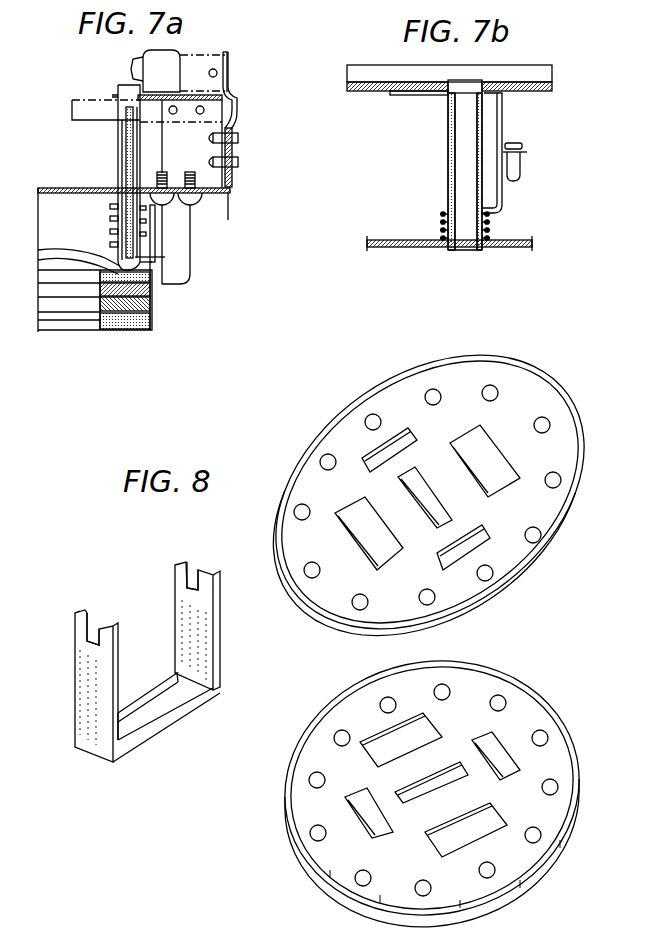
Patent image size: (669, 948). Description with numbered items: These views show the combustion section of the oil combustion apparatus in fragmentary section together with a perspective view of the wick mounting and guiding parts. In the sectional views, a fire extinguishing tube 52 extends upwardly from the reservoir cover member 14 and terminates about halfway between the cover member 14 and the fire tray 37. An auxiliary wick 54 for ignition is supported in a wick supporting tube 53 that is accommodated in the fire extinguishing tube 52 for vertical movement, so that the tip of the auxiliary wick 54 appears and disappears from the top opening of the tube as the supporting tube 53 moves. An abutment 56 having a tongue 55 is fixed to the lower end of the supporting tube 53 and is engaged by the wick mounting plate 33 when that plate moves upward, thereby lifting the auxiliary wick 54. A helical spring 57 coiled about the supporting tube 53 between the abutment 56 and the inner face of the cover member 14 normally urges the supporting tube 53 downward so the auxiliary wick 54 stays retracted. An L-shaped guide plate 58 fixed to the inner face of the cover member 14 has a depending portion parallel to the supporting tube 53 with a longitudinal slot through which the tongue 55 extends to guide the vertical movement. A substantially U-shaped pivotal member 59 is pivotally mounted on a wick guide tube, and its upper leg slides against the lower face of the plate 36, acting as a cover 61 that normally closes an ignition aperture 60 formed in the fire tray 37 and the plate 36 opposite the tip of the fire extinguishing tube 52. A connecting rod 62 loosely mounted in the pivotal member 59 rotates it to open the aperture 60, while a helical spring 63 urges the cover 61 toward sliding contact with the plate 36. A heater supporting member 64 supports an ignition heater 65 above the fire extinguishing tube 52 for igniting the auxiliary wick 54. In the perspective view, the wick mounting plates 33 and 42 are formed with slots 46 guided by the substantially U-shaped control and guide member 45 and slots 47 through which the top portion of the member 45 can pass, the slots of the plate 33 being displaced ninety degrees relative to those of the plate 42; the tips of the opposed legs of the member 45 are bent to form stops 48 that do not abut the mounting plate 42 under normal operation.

In FIG. 7a, the reservoir cover member 14 is at (52, 188).
In FIG. 8, the wick mounting plate 33 is at (548, 504).
In FIG. 7b, the plate 36 is at (532, 93).
In FIG. 7b, the fire tray 37 is at (530, 78).
In FIG. 8, the wick mounting plate 42 is at (528, 706).
In FIG. 8, the control and guide member 45 is at (205, 652).
In FIG. 8, the slots 46 is at (445, 558).
In FIG. 8, the slots 47 is at (497, 452).
In FIG. 8, the stops 48 is at (90, 624).
In FIG. 7a, the fire extinguishing tube 52 is at (118, 178).
In FIG. 7a, the wick supporting tube 53 is at (124, 158).
In FIG. 7a, the auxiliary wick 54 is at (126, 132).
In FIG. 7a, the tongue 55 is at (140, 258).
In FIG. 7a, the abutment 56 is at (148, 262).
In FIG. 7a, the helical spring 57 is at (112, 218).
In FIG. 7a, the L-shaped guide plate 58 is at (183, 228).
In FIG. 7b, the pivotal member 59 is at (503, 122).
In FIG. 7b, the ignition aperture 60 is at (420, 82).
In FIG. 7b, the cover 61 is at (410, 95).
In FIG. 7b, the connecting rod 62 is at (522, 168).
In FIG. 7b, the helical spring 63 is at (486, 224).
In FIG. 7a, the heater supporting member 64 is at (222, 148).
In FIG. 7a, the ignition heater 65 is at (211, 52).